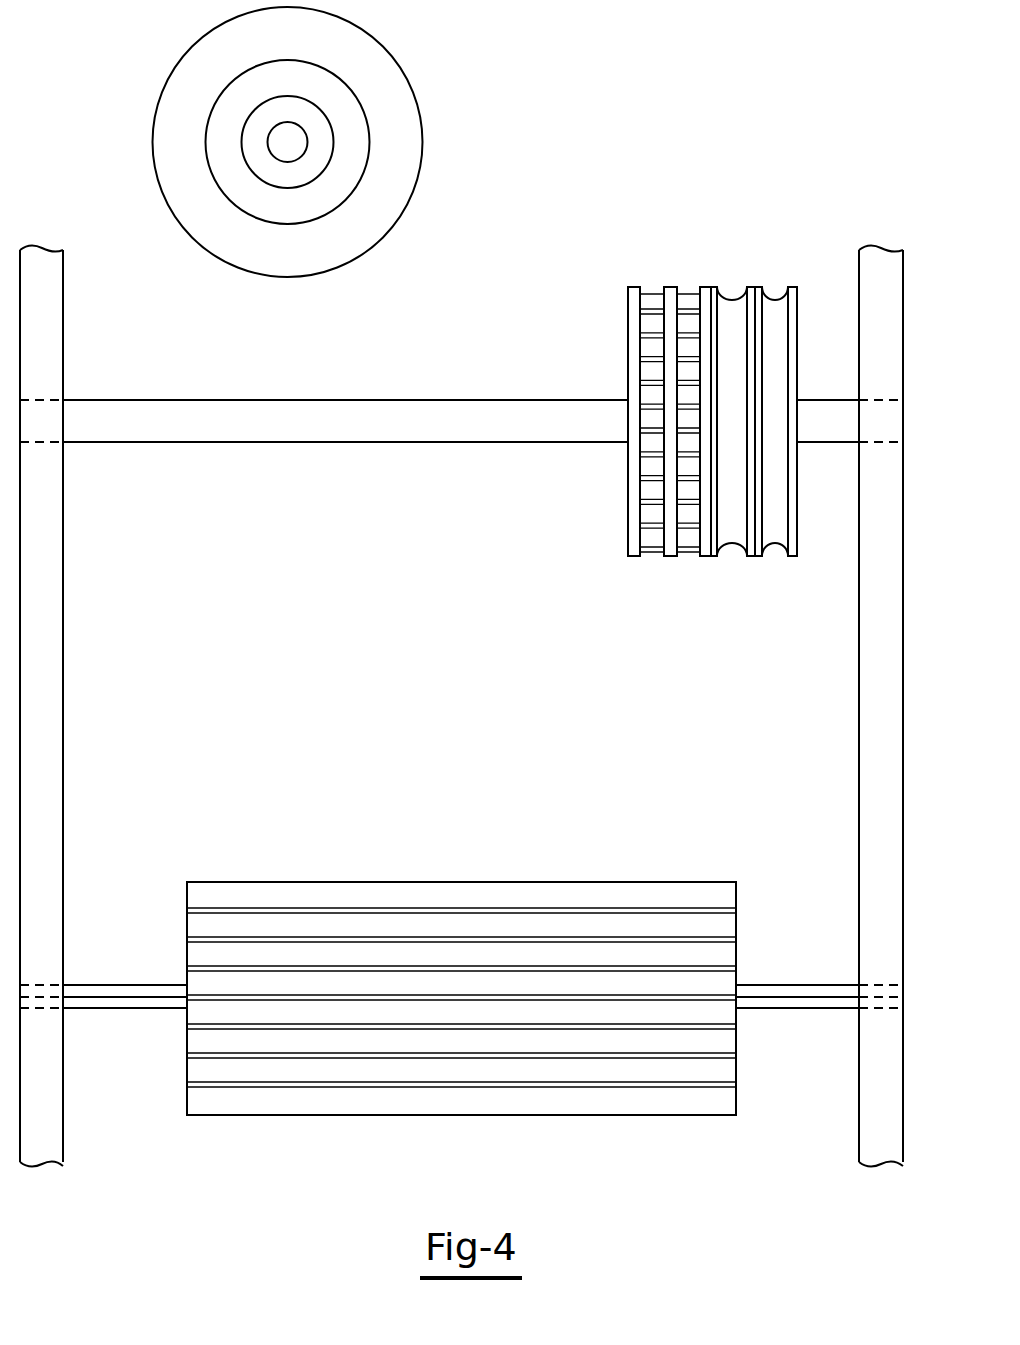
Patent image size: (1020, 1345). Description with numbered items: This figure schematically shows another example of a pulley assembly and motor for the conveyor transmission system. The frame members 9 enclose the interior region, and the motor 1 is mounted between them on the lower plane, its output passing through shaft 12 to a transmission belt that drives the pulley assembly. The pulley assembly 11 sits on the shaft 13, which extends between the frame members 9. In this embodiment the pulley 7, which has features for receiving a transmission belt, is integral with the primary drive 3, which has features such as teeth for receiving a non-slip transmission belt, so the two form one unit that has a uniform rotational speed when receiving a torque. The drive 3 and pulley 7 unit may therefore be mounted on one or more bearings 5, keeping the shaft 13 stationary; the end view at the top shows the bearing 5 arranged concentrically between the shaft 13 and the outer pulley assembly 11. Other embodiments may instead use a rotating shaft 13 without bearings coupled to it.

The motor 1 is at (462, 882).
The primary drive 3 is at (630, 521).
The bearing 5 is at (228, 148).
The pulley 7 is at (797, 534).
The frame member 9 is at (63, 1140).
The pulley 11 is at (495, 329).
The motor shaft 12 is at (125, 985).
The shaft 13 is at (420, 400).